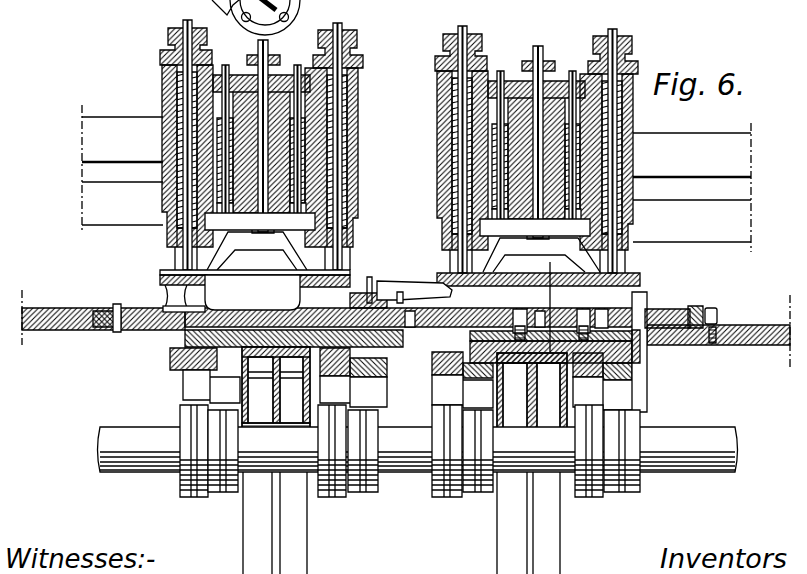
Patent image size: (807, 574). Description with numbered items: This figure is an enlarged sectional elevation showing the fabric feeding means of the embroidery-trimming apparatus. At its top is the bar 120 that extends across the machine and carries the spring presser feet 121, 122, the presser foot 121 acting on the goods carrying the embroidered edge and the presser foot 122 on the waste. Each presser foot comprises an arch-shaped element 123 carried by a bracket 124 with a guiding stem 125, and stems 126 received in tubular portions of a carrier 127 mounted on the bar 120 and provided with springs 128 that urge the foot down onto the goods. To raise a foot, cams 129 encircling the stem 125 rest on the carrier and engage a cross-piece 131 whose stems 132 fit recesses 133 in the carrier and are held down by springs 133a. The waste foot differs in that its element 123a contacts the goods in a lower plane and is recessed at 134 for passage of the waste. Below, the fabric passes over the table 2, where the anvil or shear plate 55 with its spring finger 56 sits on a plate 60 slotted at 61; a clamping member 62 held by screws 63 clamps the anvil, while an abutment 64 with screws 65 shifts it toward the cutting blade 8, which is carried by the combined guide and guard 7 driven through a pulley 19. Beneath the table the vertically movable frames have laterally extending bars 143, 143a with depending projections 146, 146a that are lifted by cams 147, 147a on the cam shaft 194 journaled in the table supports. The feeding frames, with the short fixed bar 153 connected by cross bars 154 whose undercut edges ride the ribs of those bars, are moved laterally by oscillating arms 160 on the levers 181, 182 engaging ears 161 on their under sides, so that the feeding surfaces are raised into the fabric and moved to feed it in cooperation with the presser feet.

The supplemental bed or table 2 is at (63, 307).
The combined guide and guard 7 is at (367, 286).
The cutting blade 8 is at (400, 291).
The pulley 19 is at (532, 346).
The anvil or shear plate 55 is at (492, 309).
The spring tongue or finger 56 is at (410, 322).
The plate 60 is at (660, 316).
The slot 61 is at (601, 313).
The clamping member 62 is at (538, 311).
The screws 63 is at (520, 309).
The abutment 64 is at (697, 308).
The screws 65 is at (717, 315).
The bar 120 is at (753, 158).
The spring presser foot 121 is at (633, 286).
The spring presser foot 122 is at (239, 310).
The arch-shaped element 123 is at (541, 254).
The element 123a is at (257, 251).
The bracket 124 is at (263, 231).
The guiding stem 125 is at (268, 47).
The stems 126 is at (195, 10).
The carrier 127 is at (168, 75).
The springs 128 is at (175, 90).
The cams 129 is at (273, 60).
The cross-piece 131 is at (255, 57).
The stems 132 is at (245, 56).
The recesses 133 is at (295, 177).
The springs 133a is at (231, 153).
The recess 134 is at (213, 272).
The laterally extending bars 143 is at (638, 372).
The laterally extending bars 143a is at (576, 396).
The depending projections 146 is at (640, 410).
The depending projections 146a is at (450, 386).
The cams 147 is at (222, 497).
The cams 147a is at (201, 498).
The short fixed bar 153 is at (410, 285).
The cross bars 154 is at (378, 346).
The oscillating arms 160 is at (262, 365).
The ears 161 is at (310, 365).
The arms or levers 181 is at (252, 541).
The arms or levers 182 is at (300, 549).
The cam shaft 194 is at (675, 440).